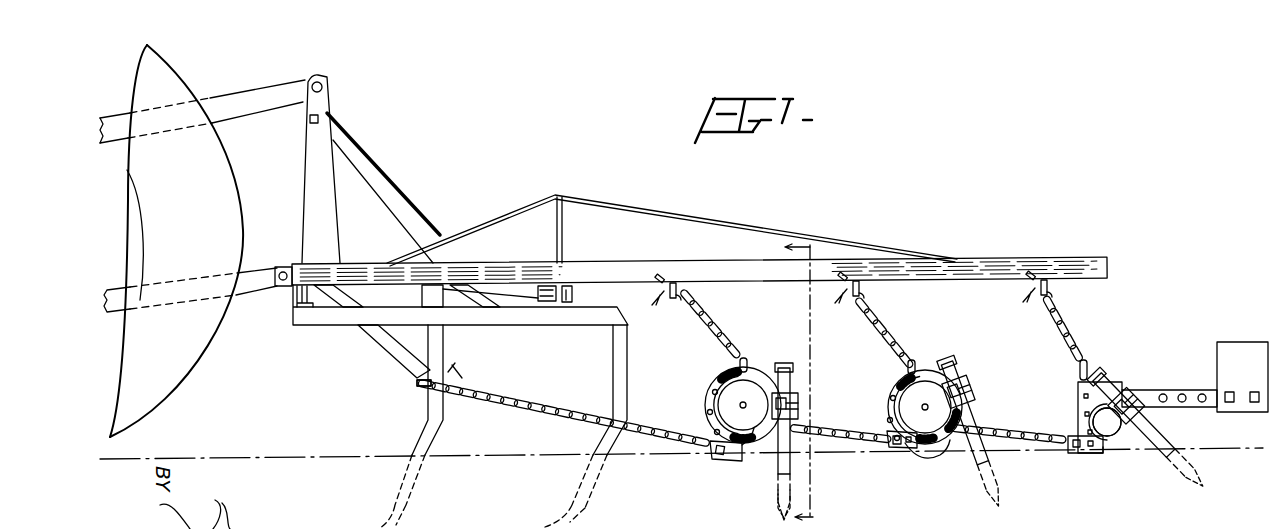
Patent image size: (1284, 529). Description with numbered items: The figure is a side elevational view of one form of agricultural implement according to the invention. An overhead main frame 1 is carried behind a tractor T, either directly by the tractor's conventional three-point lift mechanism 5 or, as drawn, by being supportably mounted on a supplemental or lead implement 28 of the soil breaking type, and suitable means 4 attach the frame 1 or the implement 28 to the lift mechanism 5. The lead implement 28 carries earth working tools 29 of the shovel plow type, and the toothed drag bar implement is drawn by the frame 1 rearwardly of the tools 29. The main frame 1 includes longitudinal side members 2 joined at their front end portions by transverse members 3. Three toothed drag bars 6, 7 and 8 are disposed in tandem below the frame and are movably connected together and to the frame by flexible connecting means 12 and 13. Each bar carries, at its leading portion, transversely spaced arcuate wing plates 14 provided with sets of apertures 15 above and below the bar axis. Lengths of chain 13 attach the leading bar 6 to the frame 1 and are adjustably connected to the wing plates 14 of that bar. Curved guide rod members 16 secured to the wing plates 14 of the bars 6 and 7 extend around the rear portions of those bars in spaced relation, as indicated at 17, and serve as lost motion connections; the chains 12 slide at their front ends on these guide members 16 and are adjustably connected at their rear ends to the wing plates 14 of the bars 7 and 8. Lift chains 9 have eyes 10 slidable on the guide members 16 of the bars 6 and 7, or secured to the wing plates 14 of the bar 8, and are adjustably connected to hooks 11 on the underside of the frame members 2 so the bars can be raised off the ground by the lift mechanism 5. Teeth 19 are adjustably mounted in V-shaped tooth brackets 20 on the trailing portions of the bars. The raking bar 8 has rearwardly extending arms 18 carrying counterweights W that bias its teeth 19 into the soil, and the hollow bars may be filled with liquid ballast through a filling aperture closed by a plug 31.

The tractor T is at (182, 90).
The main frame 1 is at (1010, 248).
The longitudinal side members 2 is at (1068, 265).
The transverse members 3 is at (793, 381).
The attaching means 4 is at (380, 161).
The three-point lift mechanism 5 is at (260, 101).
The leading toothed drag bar 6 is at (768, 374).
The second toothed drag bar 7 is at (935, 392).
The trailing or raking drag bar 8 is at (1113, 432).
The lift chains 9 is at (712, 328).
The eyes 10 is at (754, 385).
The hooks 11 is at (680, 296).
The chains 12 is at (846, 456).
The lengths of chain 13 is at (533, 407).
The arcuate wing plates 14 is at (704, 397).
The apertures 15 is at (714, 391).
The curved guide rod members 16 is at (742, 462).
The spaced relation 17 is at (766, 440).
The rearwardly extending arms 18 is at (1147, 390).
The teeth 19 is at (792, 382).
The V-shaped tooth brackets 20 is at (806, 405).
The supplemental or lead implement 28 is at (330, 312).
The earth working tools 29 is at (422, 436).
The filling aperture and closure plug 31 is at (925, 380).
The counterweights W is at (1232, 352).